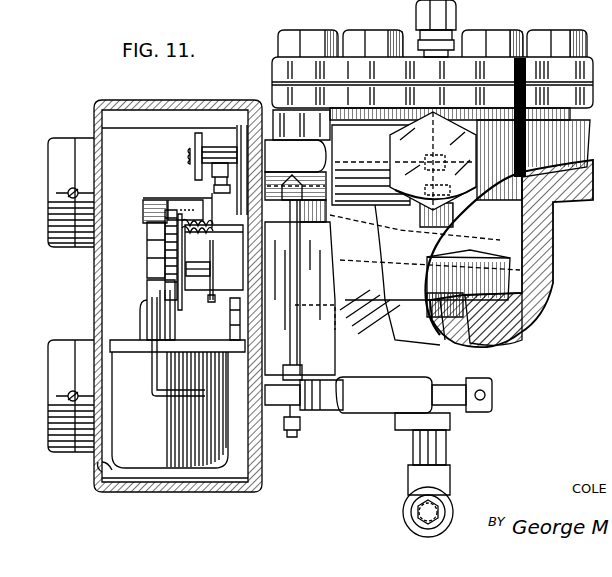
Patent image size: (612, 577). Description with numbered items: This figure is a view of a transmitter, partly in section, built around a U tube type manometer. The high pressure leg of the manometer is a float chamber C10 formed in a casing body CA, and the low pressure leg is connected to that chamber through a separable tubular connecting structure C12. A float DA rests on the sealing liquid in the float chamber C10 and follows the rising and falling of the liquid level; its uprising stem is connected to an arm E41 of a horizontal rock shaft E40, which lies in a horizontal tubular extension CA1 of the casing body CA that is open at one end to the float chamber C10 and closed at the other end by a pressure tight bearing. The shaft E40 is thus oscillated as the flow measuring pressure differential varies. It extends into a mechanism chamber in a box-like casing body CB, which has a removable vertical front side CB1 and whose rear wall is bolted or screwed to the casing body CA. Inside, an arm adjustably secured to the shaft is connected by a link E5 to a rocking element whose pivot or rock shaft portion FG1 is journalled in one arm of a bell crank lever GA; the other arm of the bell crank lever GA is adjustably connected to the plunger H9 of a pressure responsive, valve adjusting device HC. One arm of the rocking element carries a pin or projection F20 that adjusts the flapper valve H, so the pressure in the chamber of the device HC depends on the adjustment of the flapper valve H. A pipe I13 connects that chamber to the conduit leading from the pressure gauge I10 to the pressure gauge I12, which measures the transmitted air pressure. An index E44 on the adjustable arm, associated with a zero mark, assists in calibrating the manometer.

The casing body CB is at (161, 101).
The removable vertical front side CB1 is at (96, 129).
The pressure gauge I10 is at (58, 172).
The pressure gauge I12 is at (58, 380).
The pipe I13 is at (153, 384).
The pin or projection F20 is at (148, 228).
The flapper valve H is at (154, 244).
The bell crank lever GA is at (179, 256).
The pivot or rock shaft portion FG1 is at (197, 272).
The link E5 is at (216, 268).
The index E44 is at (236, 303).
The plunger H9 is at (178, 322).
The pressure responsive valve adjusting device HC is at (100, 462).
The horizontal tubular extension CA1 is at (333, 148).
The horizontal rock shaft E40 is at (378, 172).
The arm E41 is at (437, 172).
The casing body CA is at (547, 250).
The float chamber C10 is at (518, 294).
The float DA is at (462, 261).
The separable tubular connecting structure C12 is at (424, 512).